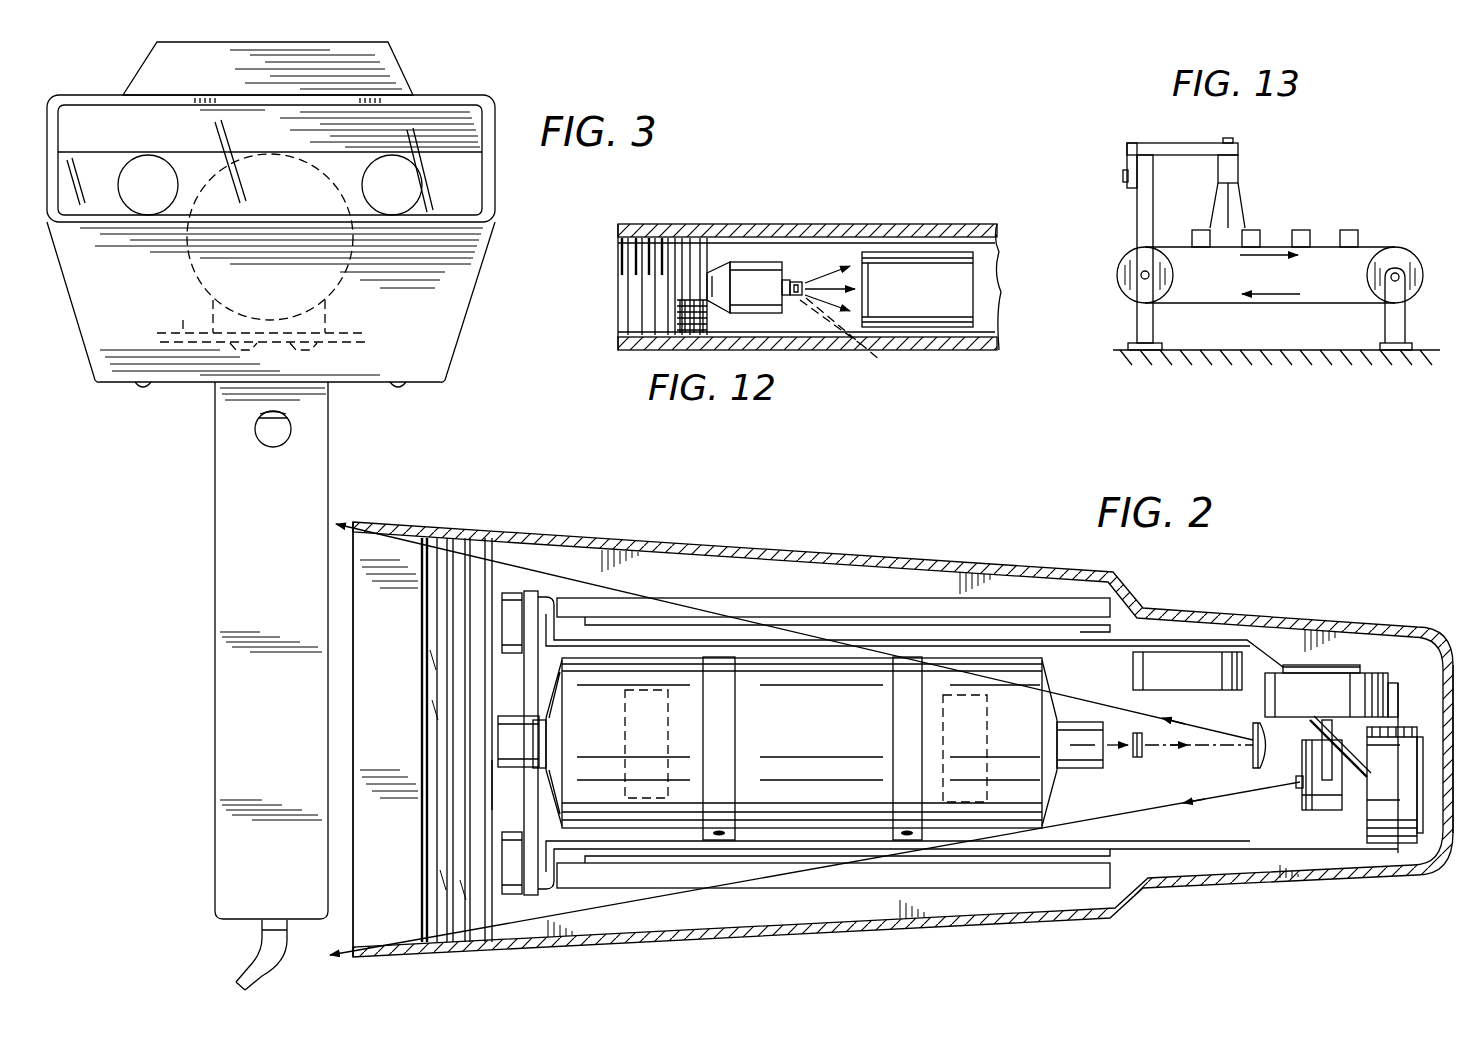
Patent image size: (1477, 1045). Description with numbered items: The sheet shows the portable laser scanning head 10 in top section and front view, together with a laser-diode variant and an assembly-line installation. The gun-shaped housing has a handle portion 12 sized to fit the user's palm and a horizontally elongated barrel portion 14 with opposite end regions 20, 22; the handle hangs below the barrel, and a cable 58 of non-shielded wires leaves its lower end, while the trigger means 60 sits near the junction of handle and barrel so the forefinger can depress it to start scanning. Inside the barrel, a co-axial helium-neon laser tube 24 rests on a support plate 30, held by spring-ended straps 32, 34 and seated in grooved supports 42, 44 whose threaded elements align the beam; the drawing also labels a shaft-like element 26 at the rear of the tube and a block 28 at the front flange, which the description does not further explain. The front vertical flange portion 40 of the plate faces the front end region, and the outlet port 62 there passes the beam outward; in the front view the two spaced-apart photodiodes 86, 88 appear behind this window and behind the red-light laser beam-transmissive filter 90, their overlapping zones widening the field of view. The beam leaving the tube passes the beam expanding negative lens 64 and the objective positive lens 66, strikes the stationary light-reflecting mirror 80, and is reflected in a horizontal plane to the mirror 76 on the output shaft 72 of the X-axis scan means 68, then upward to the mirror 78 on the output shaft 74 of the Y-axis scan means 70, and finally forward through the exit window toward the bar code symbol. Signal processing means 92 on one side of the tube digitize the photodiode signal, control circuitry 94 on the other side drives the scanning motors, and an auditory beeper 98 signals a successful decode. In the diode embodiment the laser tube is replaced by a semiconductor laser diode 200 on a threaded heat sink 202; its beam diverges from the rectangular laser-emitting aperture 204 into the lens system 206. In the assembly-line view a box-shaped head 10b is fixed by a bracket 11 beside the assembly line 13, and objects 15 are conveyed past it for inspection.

In FIG. 3, the portable laser scanning head 10 is at (198, 484).
In FIG. 2, the portable laser scanning head 10 is at (1211, 608).
In FIG. 12, the portable laser scanning head 10 is at (795, 221).
In FIG. 13, the box-shaped head 10b is at (1246, 165).
In FIG. 13, the bracket 11 is at (1190, 141).
In FIG. 3, the handle portion 12 is at (334, 503).
In FIG. 13, the assembly line 13 is at (1268, 331).
In FIG. 3, the barrel portion 14 is at (470, 317).
In FIG. 2, the barrel portion 14 is at (931, 559).
In FIG. 13, the objects 15 is at (1334, 208).
In FIG. 3, the end region 20 is at (503, 204).
In FIG. 2, the end region 20 is at (387, 518).
In FIG. 2, the end region 22 is at (1456, 660).
In FIG. 3, the helium-neon laser tube 24 is at (342, 276).
In FIG. 2, the helium-neon laser tube 24 is at (822, 737).
In FIG. 2, the motor shaft 26 is at (1080, 770).
In FIG. 2, the mounting block 28 is at (505, 768).
In FIG. 3, the support plate 30 is at (213, 294).
In FIG. 2, the strap 32 is at (722, 752).
In FIG. 2, the strap 34 is at (900, 738).
In FIG. 2, the front vertical flange portion 40 is at (524, 703).
In FIG. 2, the grooved support 42 is at (624, 726).
In FIG. 3, the grooved support 44 is at (325, 294).
In FIG. 2, the grooved support 44 is at (988, 727).
In FIG. 3, the cable 58 is at (262, 939).
In FIG. 3, the trigger means 60 is at (294, 429).
In FIG. 3, the outlet port 62 is at (442, 130).
In FIG. 2, the outlet port 62 is at (438, 676).
In FIG. 2, the beam expanding negative lens 64 is at (1137, 759).
In FIG. 2, the objective positive lens 66 is at (1253, 757).
In FIG. 2, the X-axis scan means 68 is at (1404, 788).
In FIG. 2, the Y-axis scan means 70 is at (1323, 702).
In FIG. 2, the output shaft 72 is at (1357, 792).
In FIG. 2, the output shaft 74 is at (1335, 739).
In FIG. 2, the mirror 76 is at (1298, 778).
In FIG. 2, the mirror 78 is at (1312, 808).
In FIG. 2, the stationary light-reflecting mirror 80 is at (1320, 733).
In FIG. 3, the photodiode 86 is at (124, 189).
In FIG. 2, the photodiode 86 is at (512, 592).
In FIG. 3, the photodiode 88 is at (425, 187).
In FIG. 2, the photodiode 88 is at (511, 894).
In FIG. 2, the red-light laser beam-transmissive filter 90 is at (487, 819).
In FIG. 2, the signal processing means 92 is at (804, 612).
In FIG. 2, the control circuitry 94 is at (837, 886).
In FIG. 2, the auditory beeper 98 is at (1190, 678).
In FIG. 12, the semiconductor laser diode 200 is at (790, 280).
In FIG. 12, the heat sink 202 is at (782, 313).
In FIG. 12, the laser-emitting aperture 204 is at (854, 343).
In FIG. 12, the lens system 206 is at (955, 262).